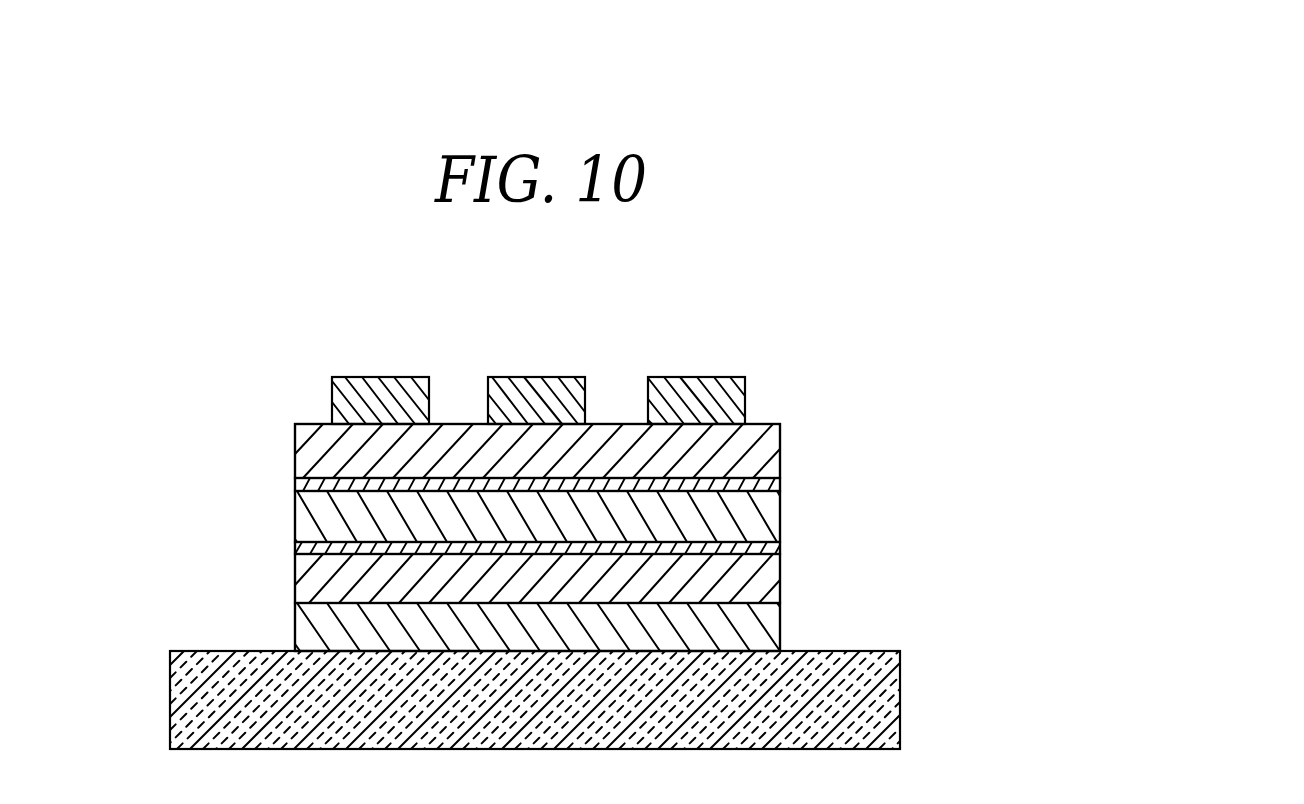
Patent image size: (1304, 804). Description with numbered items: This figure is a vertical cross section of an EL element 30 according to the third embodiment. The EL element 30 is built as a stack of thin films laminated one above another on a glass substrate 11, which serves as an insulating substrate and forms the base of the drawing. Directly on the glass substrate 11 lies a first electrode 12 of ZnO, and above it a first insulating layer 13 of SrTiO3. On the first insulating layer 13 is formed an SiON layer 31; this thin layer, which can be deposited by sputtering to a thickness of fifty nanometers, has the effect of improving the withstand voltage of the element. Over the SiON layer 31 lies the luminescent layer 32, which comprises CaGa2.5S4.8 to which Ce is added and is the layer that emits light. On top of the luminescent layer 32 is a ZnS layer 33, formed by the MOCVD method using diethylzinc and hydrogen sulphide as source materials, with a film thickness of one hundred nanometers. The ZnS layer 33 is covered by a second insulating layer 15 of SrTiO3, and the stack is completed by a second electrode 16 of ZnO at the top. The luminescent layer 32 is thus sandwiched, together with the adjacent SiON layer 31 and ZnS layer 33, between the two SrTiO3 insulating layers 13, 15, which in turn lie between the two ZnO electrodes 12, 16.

The EL element 30 is at (765, 304).
The glass substrate 11 is at (890, 695).
The first electrode 12 is at (772, 637).
The first insulating layer 13 is at (772, 580).
The SiON layer 31 is at (300, 545).
The luminescent layer 32 is at (772, 526).
The ZnS layer 33 is at (300, 484).
The second insulating layer 15 is at (765, 459).
The second electrode 16 is at (735, 410).